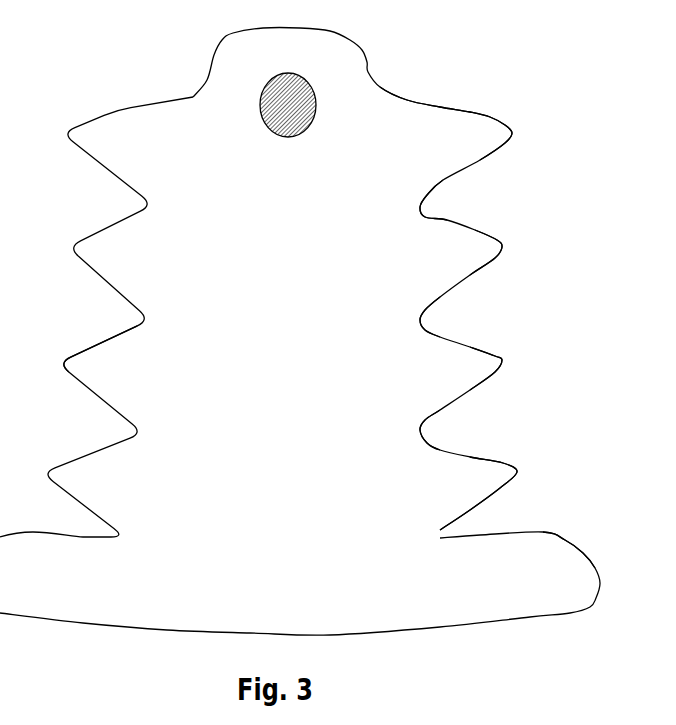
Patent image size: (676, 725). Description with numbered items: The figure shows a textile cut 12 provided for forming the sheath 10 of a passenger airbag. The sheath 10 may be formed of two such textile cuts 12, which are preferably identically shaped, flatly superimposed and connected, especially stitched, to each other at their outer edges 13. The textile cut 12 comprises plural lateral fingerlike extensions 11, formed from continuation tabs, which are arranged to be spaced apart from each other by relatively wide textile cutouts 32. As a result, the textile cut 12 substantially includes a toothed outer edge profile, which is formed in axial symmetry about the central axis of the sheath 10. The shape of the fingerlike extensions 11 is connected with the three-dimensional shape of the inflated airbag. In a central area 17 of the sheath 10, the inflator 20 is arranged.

The sheath 10 is at (377, 135).
The fingerlike extensions 11 is at (490, 140).
The textile cut 12 is at (513, 80).
The outer edges 13 is at (473, 230).
The central area 17 is at (277, 386).
The inflator 20 is at (312, 83).
The textile cutouts 32 is at (470, 210).